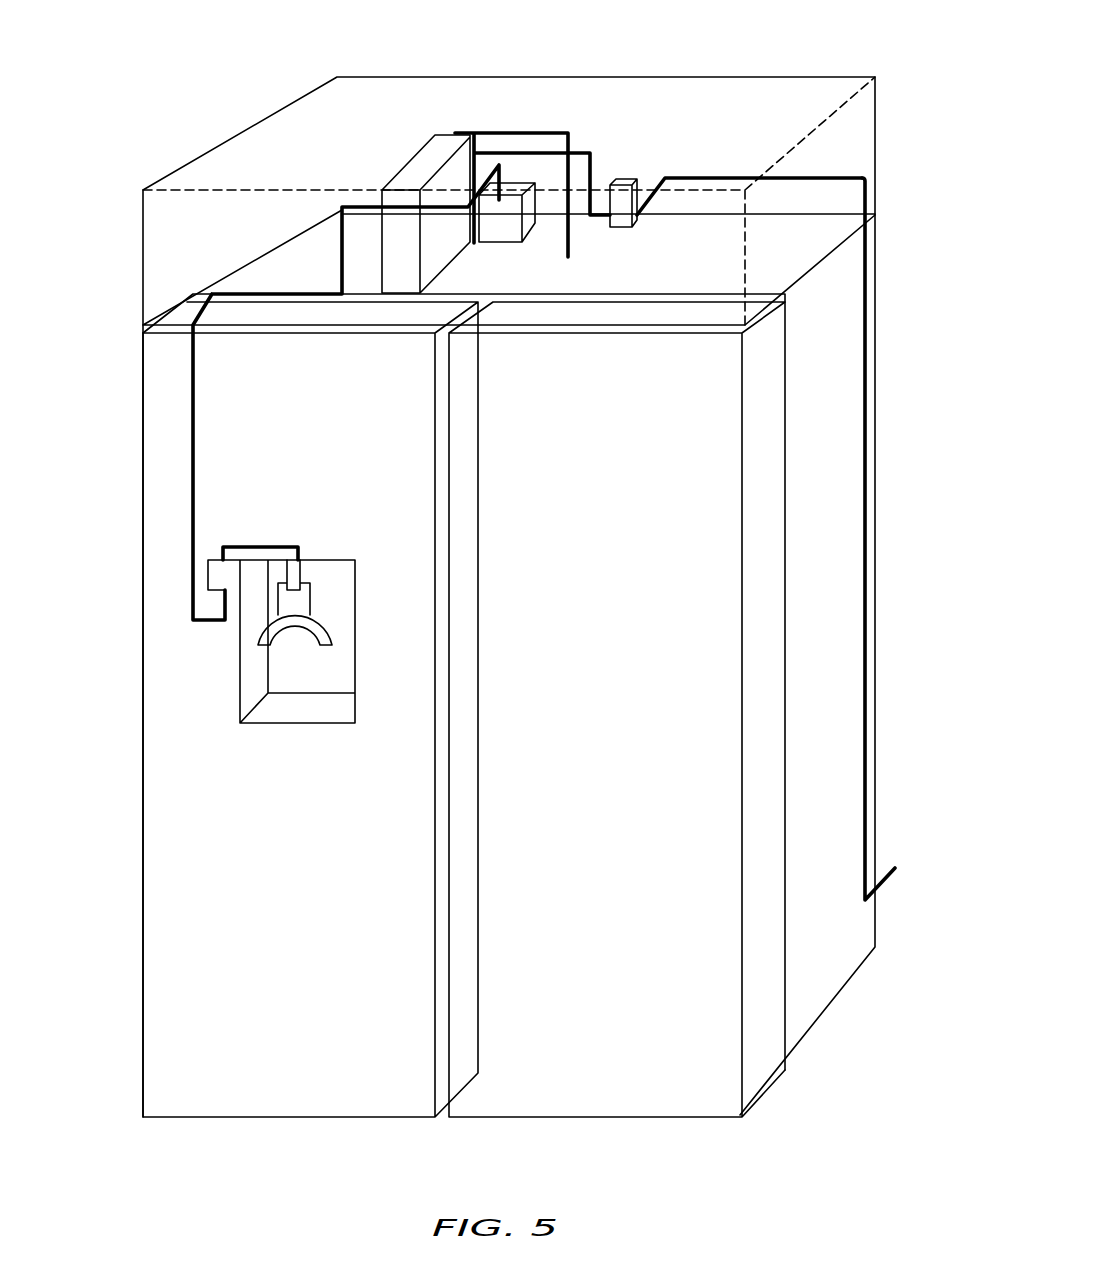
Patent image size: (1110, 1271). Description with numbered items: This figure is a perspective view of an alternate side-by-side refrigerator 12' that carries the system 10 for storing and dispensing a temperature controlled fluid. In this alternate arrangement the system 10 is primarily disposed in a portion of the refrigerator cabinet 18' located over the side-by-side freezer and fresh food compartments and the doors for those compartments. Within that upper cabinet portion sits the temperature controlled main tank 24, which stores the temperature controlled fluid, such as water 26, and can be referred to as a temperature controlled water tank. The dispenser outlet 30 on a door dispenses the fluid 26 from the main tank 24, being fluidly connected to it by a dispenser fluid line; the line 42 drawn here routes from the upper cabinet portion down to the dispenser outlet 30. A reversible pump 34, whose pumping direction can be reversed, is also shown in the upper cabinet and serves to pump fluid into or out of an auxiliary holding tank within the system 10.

The system for storing and dispensing a fluid 10 is at (655, 104).
The side-by-side refrigerator 12' is at (466, 663).
The refrigerator cabinet 18' is at (703, 647).
The temperature controlled main tank 24 is at (420, 178).
The water 26 is at (440, 243).
The dispenser outlet 30 is at (293, 575).
The reversible pump 34 is at (528, 225).
The water line tubing 42 is at (488, 175).